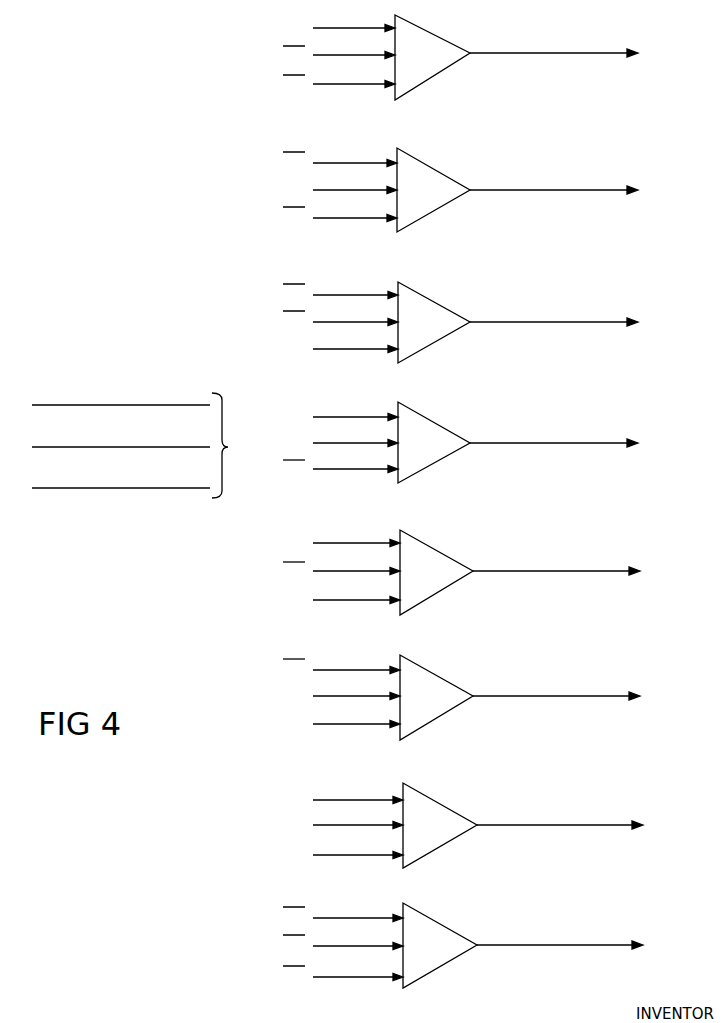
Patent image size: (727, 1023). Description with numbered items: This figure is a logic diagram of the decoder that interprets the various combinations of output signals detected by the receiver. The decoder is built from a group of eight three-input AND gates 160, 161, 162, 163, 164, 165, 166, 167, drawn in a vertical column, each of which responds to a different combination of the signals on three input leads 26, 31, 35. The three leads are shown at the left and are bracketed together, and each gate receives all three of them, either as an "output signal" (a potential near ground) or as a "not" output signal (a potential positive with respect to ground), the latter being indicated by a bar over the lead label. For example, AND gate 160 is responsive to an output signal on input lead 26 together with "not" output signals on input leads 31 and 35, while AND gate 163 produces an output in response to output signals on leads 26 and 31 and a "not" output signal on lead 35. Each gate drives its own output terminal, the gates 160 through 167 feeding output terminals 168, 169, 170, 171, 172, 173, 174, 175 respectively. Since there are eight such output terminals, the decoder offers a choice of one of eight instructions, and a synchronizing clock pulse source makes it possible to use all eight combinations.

The input lead 26 is at (121, 396).
The input lead 31 is at (121, 437).
The input lead 35 is at (121, 479).
The AND gate 160 is at (433, 34).
The AND gate 161 is at (435, 170).
The AND gate 162 is at (436, 303).
The AND gate 163 is at (436, 424).
The AND gate 164 is at (438, 551).
The AND gate 165 is at (438, 676).
The AND gate 166 is at (441, 805).
The AND gate 167 is at (441, 925).
The output terminal 168 is at (610, 53).
The output terminal 169 is at (610, 190).
The output terminal 170 is at (610, 322).
The output terminal 171 is at (610, 443).
The output terminal 172 is at (612, 571).
The output terminal 173 is at (612, 696).
The output terminal 174 is at (615, 825).
The output terminal 175 is at (615, 945).